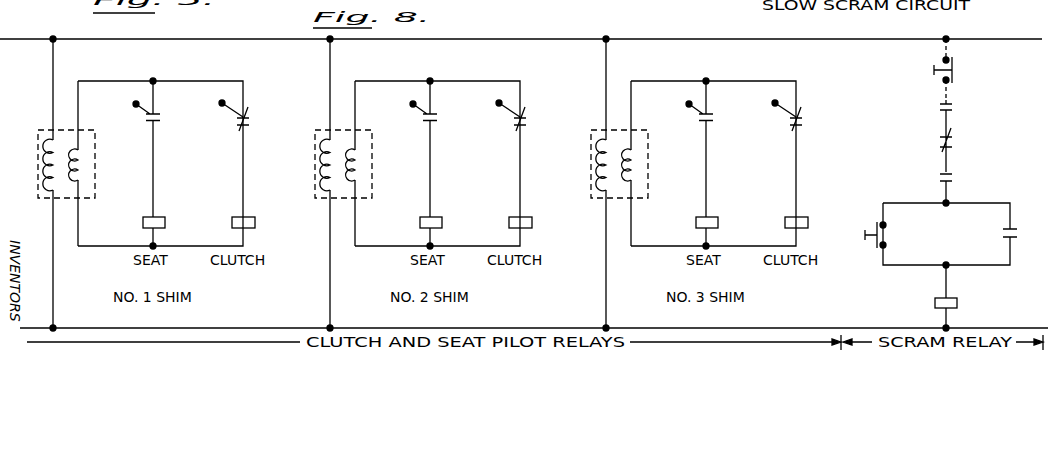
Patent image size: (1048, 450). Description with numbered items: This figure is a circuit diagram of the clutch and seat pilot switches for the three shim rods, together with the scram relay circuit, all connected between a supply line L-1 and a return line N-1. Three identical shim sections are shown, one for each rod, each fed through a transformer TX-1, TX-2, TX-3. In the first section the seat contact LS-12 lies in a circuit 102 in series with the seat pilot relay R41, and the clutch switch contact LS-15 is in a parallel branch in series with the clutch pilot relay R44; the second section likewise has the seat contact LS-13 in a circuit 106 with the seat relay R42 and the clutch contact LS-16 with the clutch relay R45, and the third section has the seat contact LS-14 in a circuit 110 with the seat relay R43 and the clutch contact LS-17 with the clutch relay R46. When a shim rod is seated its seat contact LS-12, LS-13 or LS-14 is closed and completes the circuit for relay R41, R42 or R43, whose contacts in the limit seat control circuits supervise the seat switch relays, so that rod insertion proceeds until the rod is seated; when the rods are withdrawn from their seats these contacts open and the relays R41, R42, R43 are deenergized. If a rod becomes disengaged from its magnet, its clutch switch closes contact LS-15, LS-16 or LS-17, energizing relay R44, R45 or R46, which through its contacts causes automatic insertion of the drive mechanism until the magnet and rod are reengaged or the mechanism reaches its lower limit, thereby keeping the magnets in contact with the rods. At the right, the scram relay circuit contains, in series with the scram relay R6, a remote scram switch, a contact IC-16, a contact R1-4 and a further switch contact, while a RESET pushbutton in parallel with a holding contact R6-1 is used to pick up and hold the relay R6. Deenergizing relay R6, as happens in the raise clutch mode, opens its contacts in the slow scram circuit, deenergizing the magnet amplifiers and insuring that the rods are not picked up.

The line conductor L-1 is at (460, 39).
The neutral conductor N-1 is at (534, 328).
The transformer TX-1 (No. 1 shim) TX-1 is at (86, 156).
The transformer TX-2 (No. 2 shim) TX-2 is at (363, 164).
The transformer TX-3 (No. 3 shim) TX-3 is at (639, 164).
The seat contact LS-12 is at (161, 123).
The seat contact LS-13 is at (448, 110).
The seat contact LS-14 is at (724, 110).
The clutch switch contact LS-15 is at (250, 114).
The clutch switch contact LS-16 is at (535, 114).
The clutch switch contact LS-17 is at (811, 114).
The circuit 102 is at (166, 169).
The circuit 106 is at (455, 169).
The circuit 110 is at (731, 169).
The seat relay R41 is at (163, 217).
The seat relay R42 is at (447, 222).
The seat relay R43 is at (723, 222).
The clutch relay R44 is at (252, 217).
The clutch relay R45 is at (536, 213).
The clutch relay R46 is at (812, 213).
The contact IC-16 is at (940, 108).
The relay contact R1-4 is at (952, 139).
The reset push button RESET is at (900, 235).
The scram relay holding contact R6-1 is at (1006, 230).
The scram relay R6 is at (955, 298).